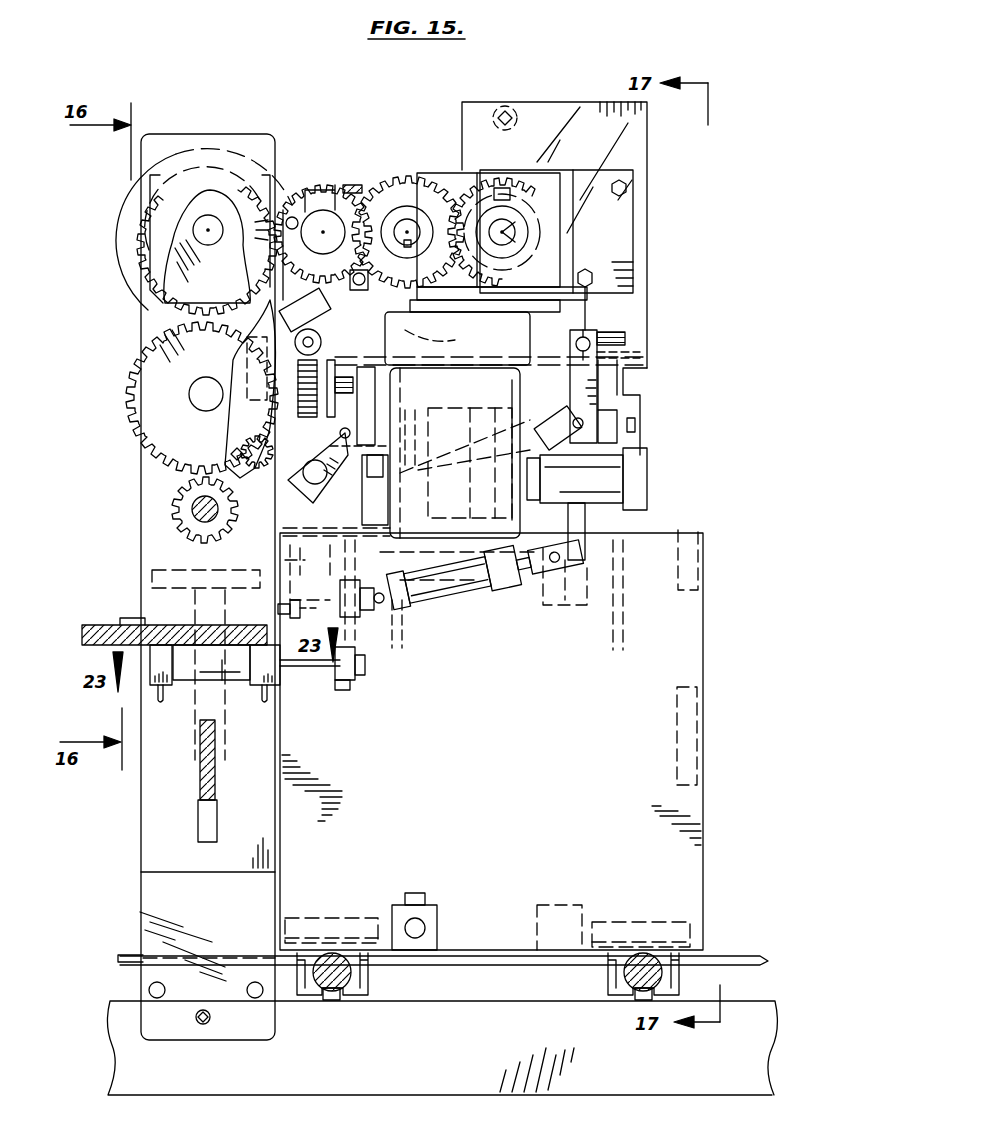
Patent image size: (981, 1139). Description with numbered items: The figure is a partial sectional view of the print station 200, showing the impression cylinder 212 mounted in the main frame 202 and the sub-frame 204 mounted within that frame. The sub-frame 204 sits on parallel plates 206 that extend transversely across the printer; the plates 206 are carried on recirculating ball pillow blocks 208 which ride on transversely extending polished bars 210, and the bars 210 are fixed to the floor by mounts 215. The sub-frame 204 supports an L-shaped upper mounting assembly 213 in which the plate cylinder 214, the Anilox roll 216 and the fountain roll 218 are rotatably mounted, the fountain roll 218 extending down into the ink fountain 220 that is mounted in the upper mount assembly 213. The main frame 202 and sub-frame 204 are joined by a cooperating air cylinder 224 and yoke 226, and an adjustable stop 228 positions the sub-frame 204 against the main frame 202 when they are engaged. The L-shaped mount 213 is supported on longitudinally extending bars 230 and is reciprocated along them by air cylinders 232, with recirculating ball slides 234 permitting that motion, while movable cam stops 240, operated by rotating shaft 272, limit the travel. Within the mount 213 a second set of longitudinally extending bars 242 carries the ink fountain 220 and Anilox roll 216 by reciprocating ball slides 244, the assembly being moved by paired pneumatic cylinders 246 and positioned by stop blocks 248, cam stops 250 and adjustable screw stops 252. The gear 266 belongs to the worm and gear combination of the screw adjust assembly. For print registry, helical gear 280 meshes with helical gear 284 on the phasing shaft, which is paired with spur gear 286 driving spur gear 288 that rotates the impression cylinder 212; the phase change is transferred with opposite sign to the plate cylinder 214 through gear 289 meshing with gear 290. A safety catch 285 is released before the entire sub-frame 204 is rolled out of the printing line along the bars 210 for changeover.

The print station 200 is at (710, 434).
The main frame 202 is at (140, 518).
The sub-frame 204 is at (705, 646).
The parallel plates 206 is at (332, 916).
The recirculating ball pillow blocks 208 is at (675, 975).
The polished bars 210 is at (315, 993).
The impression cylinder 212 is at (120, 258).
The L-shaped upper mounting assembly 213 is at (647, 518).
The plate cylinder 214 is at (330, 185).
The mounts 215 is at (333, 995).
The Anilox roll 216 is at (392, 180).
The fountain roll 218 is at (555, 324).
The ink fountain 220 is at (592, 272).
The air cylinder 224 is at (182, 688).
The yoke 226 is at (346, 682).
The adjustable stop 228 is at (278, 606).
The longitudinally extending bars 230 is at (656, 592).
The air cylinders 232 is at (448, 600).
The recirculating ball slides 234 is at (302, 548).
The movable cam stops 240 is at (258, 472).
The second set of longitudinally extending bars 242 is at (608, 483).
The reciprocating ball slides 244 is at (528, 495).
The pneumatic cylinders 246 is at (548, 410).
The stop blocks 248 is at (373, 401).
The cam stops 250 is at (319, 474).
The adjustable screw stops 252 is at (395, 380).
The gear 266 is at (236, 368).
The rotating shaft 272 is at (240, 452).
The helical gear 280 is at (172, 500).
The helical gear 284 is at (140, 430).
The safety catch 285 is at (540, 903).
The spur gear 286 is at (236, 432).
The spur gear 288 is at (175, 312).
The gear 289 is at (227, 183).
The gear 290 is at (314, 190).